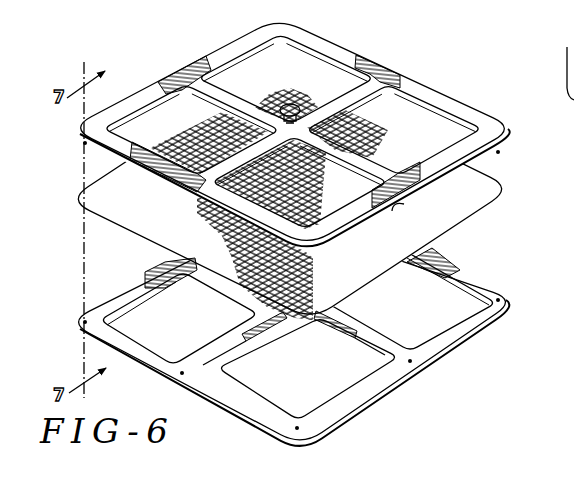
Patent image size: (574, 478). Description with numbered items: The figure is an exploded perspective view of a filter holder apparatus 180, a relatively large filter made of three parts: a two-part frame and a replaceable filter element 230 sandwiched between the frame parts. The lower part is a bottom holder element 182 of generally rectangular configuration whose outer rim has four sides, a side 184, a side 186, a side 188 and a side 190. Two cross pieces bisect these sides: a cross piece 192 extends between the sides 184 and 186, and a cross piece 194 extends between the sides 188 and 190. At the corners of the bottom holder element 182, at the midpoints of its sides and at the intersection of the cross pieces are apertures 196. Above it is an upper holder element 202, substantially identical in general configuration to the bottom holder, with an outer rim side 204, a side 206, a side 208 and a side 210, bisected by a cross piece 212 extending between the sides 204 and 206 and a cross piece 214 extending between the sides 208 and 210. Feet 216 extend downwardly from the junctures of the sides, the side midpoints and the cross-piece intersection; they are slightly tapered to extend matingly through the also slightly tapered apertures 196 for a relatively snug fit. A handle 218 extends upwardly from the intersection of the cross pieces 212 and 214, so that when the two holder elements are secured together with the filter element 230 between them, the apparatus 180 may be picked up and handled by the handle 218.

The filter holder apparatus 180 is at (408, 55).
The bottom holder element 182 is at (490, 272).
The side 184 is at (460, 333).
The side 186 is at (138, 262).
The side 188 is at (470, 281).
The side 190 is at (268, 420).
The cross piece 192 is at (376, 342).
The cross piece 194 is at (228, 325).
The apertures 196 is at (502, 300).
The upper holder element 202 is at (463, 96).
The outer rim side 204 is at (487, 157).
The side 206 is at (223, 35).
The side 208 is at (355, 62).
The side 210 is at (279, 230).
The cross piece 212 is at (365, 166).
The cross piece 214 is at (246, 152).
The feet 216 is at (501, 152).
The handle 218 is at (291, 105).
The filter element 230 is at (502, 210).